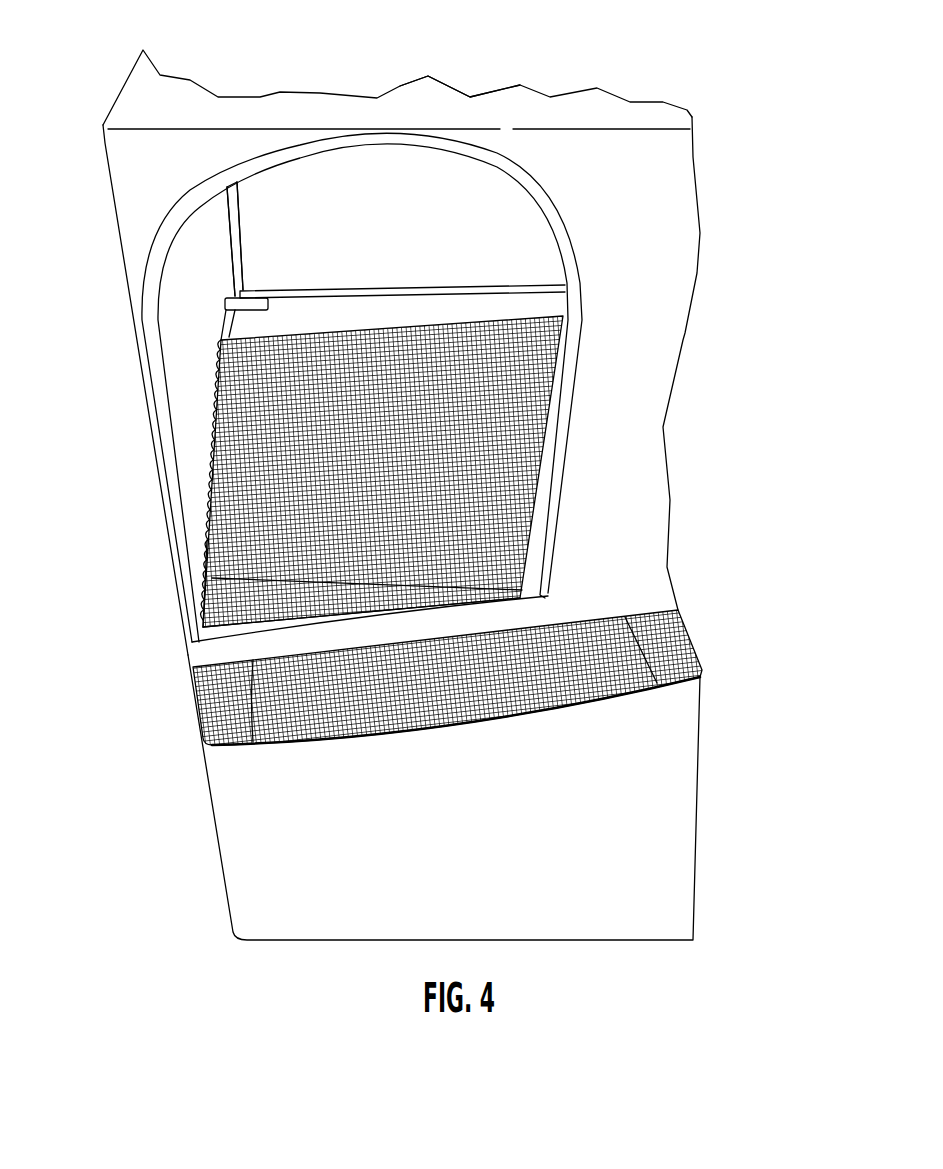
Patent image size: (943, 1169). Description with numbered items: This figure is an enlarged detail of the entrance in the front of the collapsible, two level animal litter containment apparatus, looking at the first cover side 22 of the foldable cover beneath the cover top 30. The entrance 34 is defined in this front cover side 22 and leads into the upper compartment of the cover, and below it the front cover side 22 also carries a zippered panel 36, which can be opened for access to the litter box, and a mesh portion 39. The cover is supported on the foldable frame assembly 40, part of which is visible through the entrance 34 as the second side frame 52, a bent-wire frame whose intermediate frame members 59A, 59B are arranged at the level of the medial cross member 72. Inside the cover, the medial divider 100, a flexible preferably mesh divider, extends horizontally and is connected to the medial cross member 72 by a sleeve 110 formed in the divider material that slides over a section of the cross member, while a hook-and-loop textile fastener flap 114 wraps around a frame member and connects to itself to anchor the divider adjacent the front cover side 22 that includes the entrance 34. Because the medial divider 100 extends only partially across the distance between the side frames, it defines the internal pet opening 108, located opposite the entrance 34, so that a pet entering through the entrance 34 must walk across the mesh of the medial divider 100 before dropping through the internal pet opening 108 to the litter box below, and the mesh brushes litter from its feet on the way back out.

The first cover side 22 is at (654, 282).
The cover top 30 is at (468, 100).
The entrance 34 is at (175, 372).
The zippered panel 36 is at (568, 772).
The mesh portion 39 is at (695, 648).
The foldable frame assembly 40 is at (228, 258).
The second side frame 52 is at (234, 207).
The intermediate frame member 59A is at (293, 632).
The intermediate frame member 59B is at (465, 285).
The medial cross member 72 is at (197, 560).
The medial divider 100 is at (215, 565).
The internal pet opening 108 is at (503, 300).
The sleeve 110 is at (205, 450).
The hook-and-loop textile fastener flap 114 is at (548, 597).